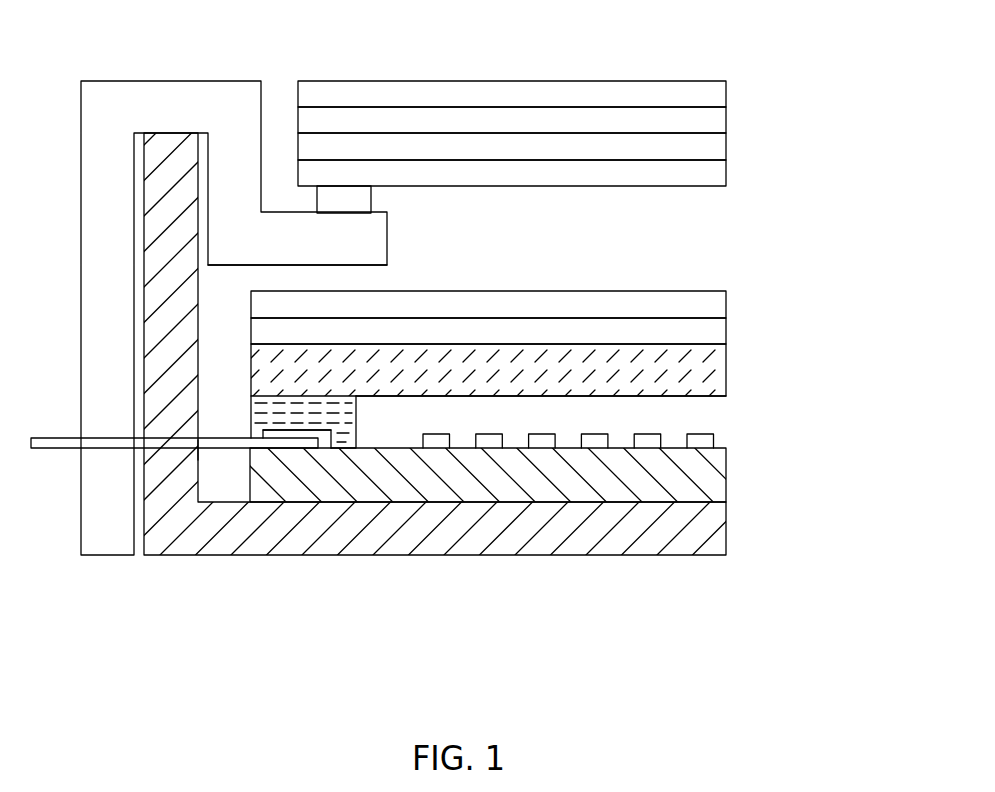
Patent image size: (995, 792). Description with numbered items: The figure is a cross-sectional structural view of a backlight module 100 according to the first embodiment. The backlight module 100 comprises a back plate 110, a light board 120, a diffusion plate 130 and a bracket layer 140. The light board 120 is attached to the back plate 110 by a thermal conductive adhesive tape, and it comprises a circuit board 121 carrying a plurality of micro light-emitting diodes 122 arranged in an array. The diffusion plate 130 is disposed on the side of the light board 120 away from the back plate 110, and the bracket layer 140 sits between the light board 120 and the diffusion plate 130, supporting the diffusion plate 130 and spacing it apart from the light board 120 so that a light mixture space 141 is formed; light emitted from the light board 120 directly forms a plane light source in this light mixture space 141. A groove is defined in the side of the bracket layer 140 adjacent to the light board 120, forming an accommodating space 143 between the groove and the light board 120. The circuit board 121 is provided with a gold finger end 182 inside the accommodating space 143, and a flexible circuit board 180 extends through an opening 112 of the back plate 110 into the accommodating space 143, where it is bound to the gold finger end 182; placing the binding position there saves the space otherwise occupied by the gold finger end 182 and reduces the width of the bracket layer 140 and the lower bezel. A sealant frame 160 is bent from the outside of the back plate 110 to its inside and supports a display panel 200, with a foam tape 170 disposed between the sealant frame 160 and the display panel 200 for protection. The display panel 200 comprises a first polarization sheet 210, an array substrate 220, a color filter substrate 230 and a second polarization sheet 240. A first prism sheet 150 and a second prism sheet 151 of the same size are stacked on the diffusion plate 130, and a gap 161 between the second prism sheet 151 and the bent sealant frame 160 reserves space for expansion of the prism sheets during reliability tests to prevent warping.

The backlight module 100 is at (482, 62).
The back plate 110 is at (725, 528).
The opening 112 is at (167, 461).
The light board 120 is at (538, 464).
The circuit board 121 is at (710, 478).
The micro light-emitting diode 122 is at (707, 443).
The diffusion plate 130 is at (720, 368).
The bracket layer 140 is at (335, 417).
The light mixture space 141 is at (698, 413).
The accommodating space 143 is at (255, 437).
The first prism sheet 150 is at (718, 328).
The second prism sheet 151 is at (725, 300).
The sealant frame 160 is at (168, 102).
The gap 161 is at (373, 278).
The foam tape 170 is at (366, 202).
The flexible circuit board 180 is at (52, 445).
The gold finger end 182 is at (293, 433).
The display panel 200 is at (597, 130).
The first polarization sheet 210 is at (554, 170).
The array substrate 220 is at (708, 144).
The color filter substrate 230 is at (708, 118).
The second polarization sheet 240 is at (706, 92).